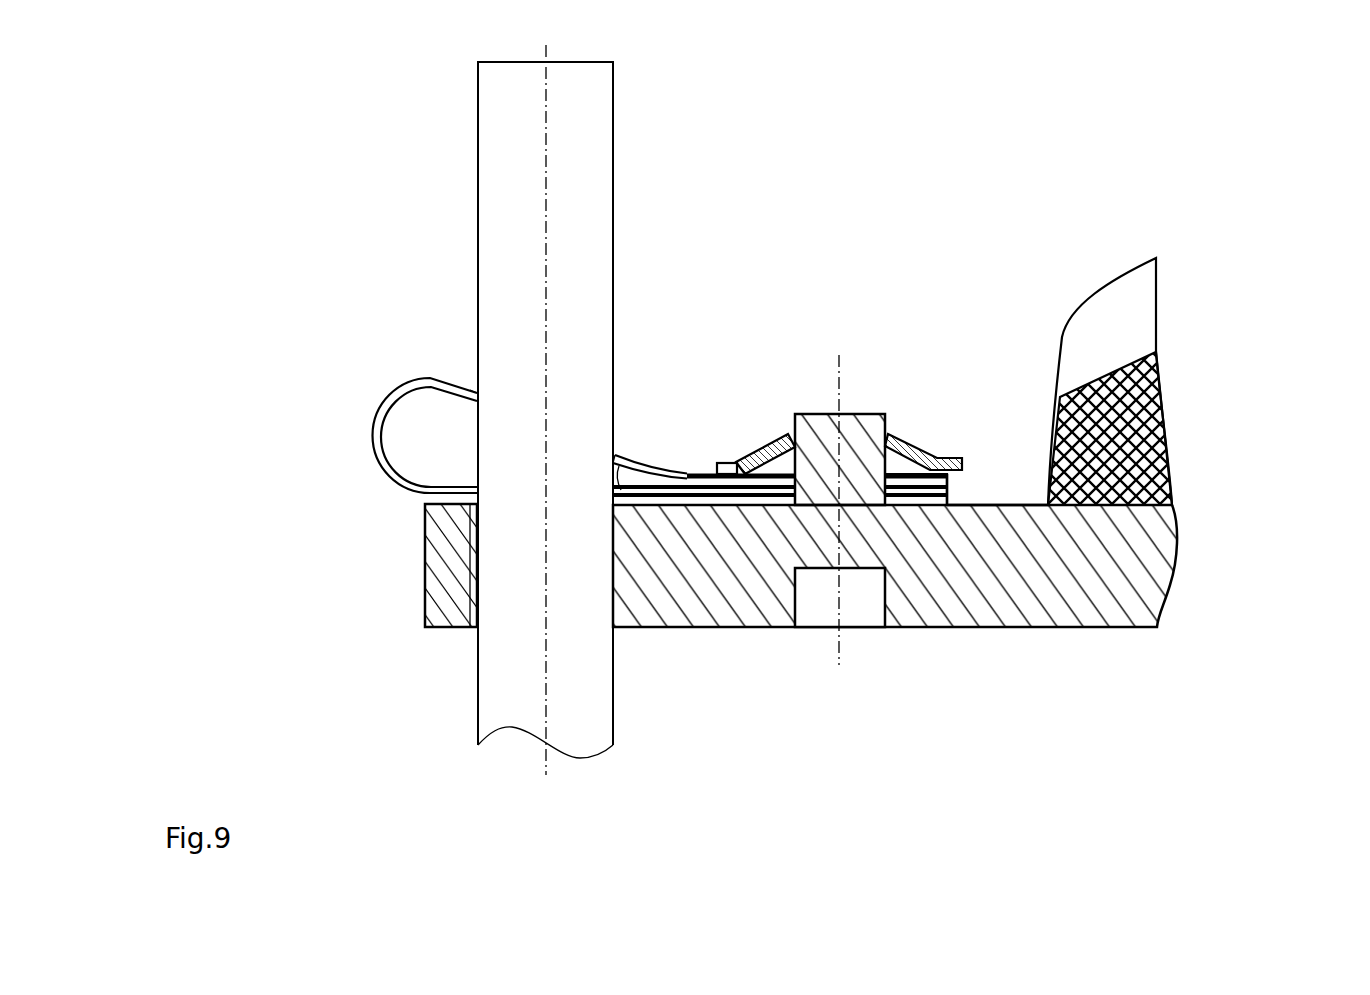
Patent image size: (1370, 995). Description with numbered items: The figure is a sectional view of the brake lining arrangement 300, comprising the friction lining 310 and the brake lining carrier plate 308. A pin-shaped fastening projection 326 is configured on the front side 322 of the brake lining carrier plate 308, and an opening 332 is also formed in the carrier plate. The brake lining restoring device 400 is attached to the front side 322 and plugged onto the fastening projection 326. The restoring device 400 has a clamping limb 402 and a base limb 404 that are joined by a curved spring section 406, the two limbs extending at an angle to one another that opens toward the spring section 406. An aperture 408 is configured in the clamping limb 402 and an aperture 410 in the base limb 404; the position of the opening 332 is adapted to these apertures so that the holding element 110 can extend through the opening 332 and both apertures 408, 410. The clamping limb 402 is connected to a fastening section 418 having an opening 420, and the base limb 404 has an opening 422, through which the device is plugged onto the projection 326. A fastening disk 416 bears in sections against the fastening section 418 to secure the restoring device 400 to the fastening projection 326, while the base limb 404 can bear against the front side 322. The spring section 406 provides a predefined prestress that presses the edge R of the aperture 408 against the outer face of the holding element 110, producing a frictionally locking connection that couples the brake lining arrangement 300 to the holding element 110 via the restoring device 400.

The holding element 110 is at (594, 193).
The brake lining arrangement 300 is at (1255, 195).
The brake lining carrier plate 308 is at (1140, 312).
The friction lining 310 is at (1110, 627).
The front side of the brake lining carrier plate 322 is at (1002, 505).
The fastening projection 326 is at (855, 435).
The opening 332 is at (470, 608).
The brake lining restoring device 400 is at (317, 307).
The clamping limb 402 is at (642, 468).
The base limb 404 is at (687, 480).
The spring section 406 is at (380, 418).
The aperture 408 is at (477, 393).
The aperture 410 is at (470, 490).
The fastening disk 416 is at (766, 440).
The fastening section 418 is at (733, 463).
The opening 420 is at (890, 470).
The opening 422 is at (893, 497).
The edge of the aperture R is at (617, 452).